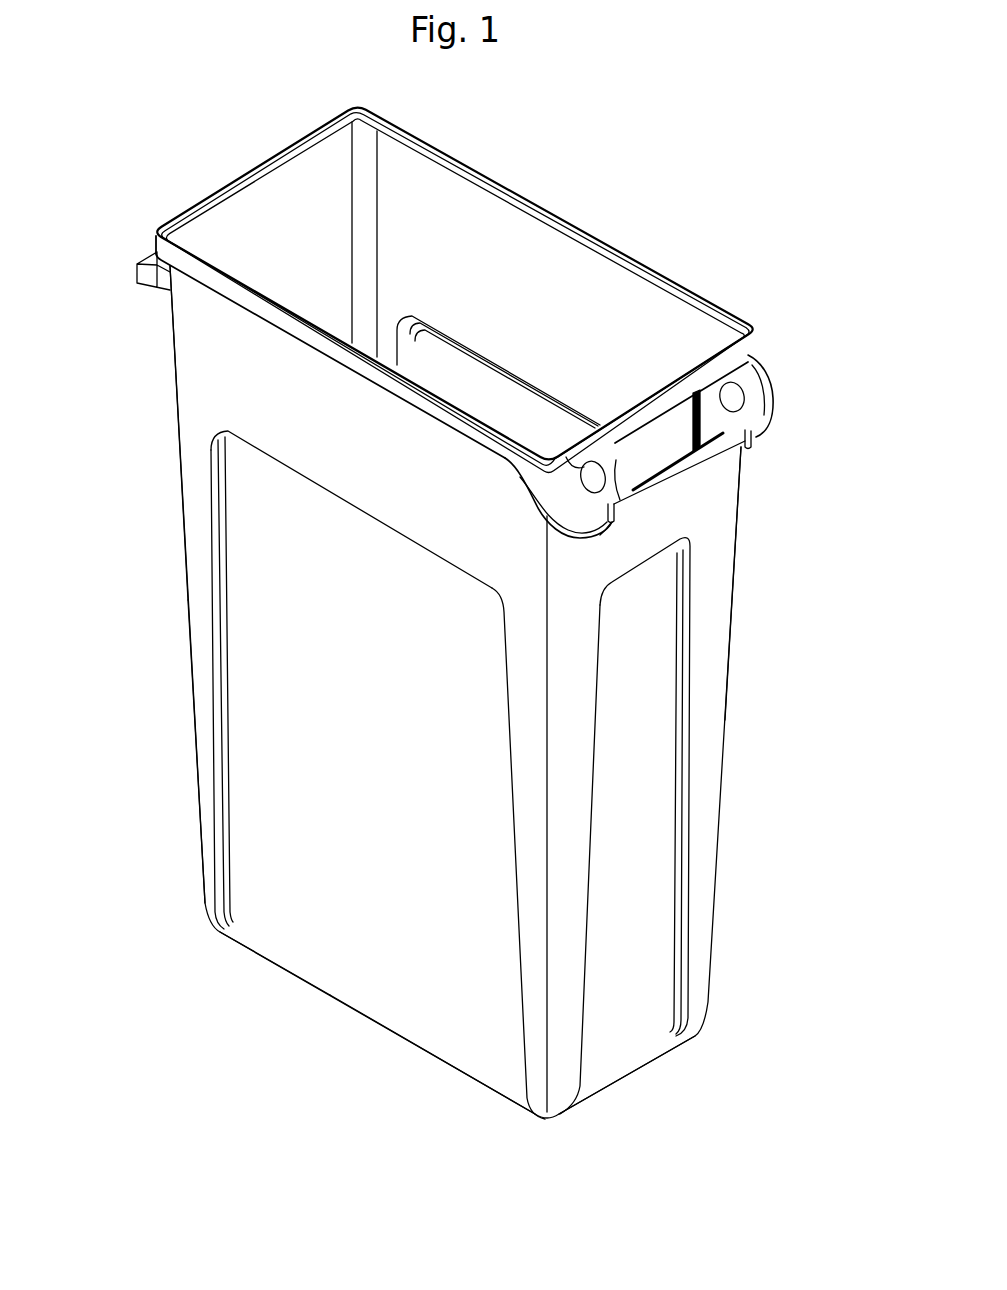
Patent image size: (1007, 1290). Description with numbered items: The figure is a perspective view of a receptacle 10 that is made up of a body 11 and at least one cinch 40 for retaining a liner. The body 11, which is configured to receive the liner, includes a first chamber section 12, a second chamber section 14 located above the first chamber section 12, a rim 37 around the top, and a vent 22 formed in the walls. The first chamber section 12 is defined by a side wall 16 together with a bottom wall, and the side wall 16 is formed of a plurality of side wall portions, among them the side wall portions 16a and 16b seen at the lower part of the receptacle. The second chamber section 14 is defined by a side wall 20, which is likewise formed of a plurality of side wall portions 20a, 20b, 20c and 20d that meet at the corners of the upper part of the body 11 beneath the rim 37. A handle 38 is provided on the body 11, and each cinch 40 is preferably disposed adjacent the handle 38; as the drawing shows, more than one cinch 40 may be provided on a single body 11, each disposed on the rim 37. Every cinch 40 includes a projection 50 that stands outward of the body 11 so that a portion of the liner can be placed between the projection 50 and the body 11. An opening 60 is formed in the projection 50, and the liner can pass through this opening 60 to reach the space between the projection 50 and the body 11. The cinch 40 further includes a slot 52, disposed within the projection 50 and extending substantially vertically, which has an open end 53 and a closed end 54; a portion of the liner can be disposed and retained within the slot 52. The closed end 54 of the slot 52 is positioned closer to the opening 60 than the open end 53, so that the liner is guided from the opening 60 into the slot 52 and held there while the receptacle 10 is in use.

The receptacle 10 is at (703, 218).
The body 11 is at (730, 531).
The first chamber section 12 is at (138, 815).
The second chamber section 14 is at (125, 397).
The side wall 16 is at (313, 968).
The side wall portion 16a is at (627, 1060).
The side wall portion 16b is at (398, 1017).
The side wall 20 is at (317, 457).
The side wall portion 20a is at (730, 492).
The side wall portion 20b is at (403, 503).
The side wall portion 20c is at (272, 193).
The side wall portion 20d is at (535, 237).
The vent 22 is at (203, 745).
The rim 37 is at (490, 170).
The handle 38 is at (670, 488).
The cinch 40 is at (785, 364).
The projection 50 is at (773, 414).
The slot 52 is at (752, 432).
The open end 53 is at (613, 527).
The closed end 54 is at (630, 488).
The opening 60 is at (730, 393).